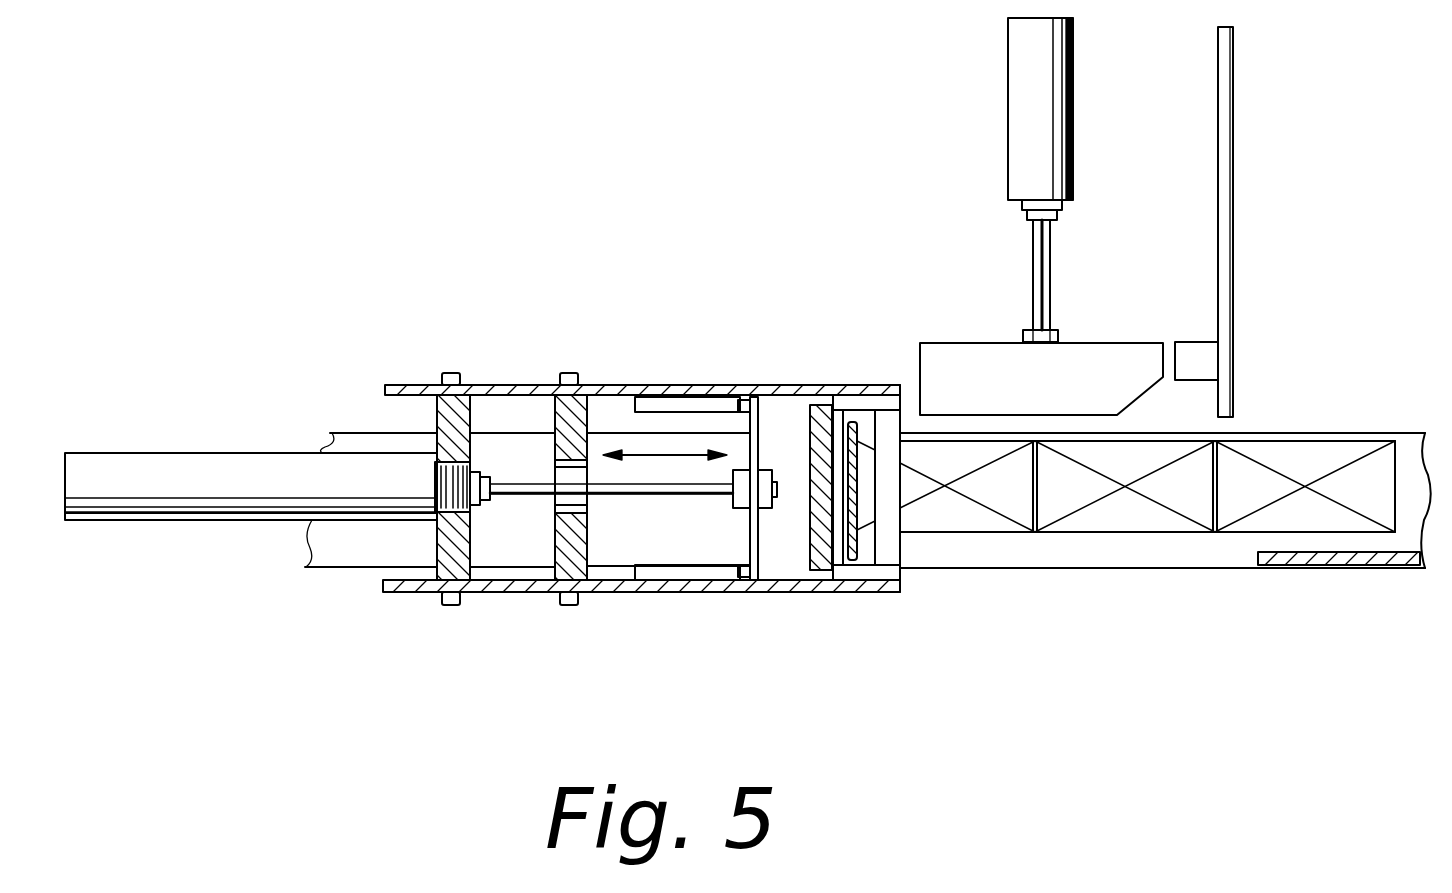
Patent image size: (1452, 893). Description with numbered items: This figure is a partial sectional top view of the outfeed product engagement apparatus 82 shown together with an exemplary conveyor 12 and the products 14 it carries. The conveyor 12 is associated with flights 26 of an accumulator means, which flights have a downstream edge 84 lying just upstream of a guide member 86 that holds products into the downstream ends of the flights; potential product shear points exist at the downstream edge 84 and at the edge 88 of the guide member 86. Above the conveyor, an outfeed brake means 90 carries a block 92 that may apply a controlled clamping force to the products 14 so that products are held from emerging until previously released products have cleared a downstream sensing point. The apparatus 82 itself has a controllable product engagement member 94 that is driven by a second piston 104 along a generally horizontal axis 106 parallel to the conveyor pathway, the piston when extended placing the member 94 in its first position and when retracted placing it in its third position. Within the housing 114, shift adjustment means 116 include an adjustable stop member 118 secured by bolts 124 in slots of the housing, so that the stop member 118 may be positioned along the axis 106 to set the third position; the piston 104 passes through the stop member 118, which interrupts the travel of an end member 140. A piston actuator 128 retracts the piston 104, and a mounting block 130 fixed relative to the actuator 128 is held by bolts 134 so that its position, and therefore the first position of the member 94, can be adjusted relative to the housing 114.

The conveyor 12 is at (928, 569).
The products 14 is at (962, 533).
The flights 26 is at (1365, 566).
The outfeed product engagement apparatus 82 is at (650, 295).
The downstream edge 84 is at (1258, 566).
The guide member 86 is at (1237, 233).
The edge 88 is at (1235, 415).
The outfeed brake means 90 is at (965, 296).
The block 92 is at (1022, 396).
The controllable product engagement member 94 is at (845, 550).
The second piston 104 is at (680, 496).
The horizontal axis 106 is at (692, 420).
The housing 114 is at (825, 385).
The shift adjustment means 116 is at (500, 628).
The adjustable stop member 118 is at (587, 550).
The bolts 124 is at (560, 374).
The piston actuator 128 is at (262, 521).
The mounting block 130 is at (448, 553).
The bolts 134 is at (440, 374).
The end member 140 is at (750, 550).